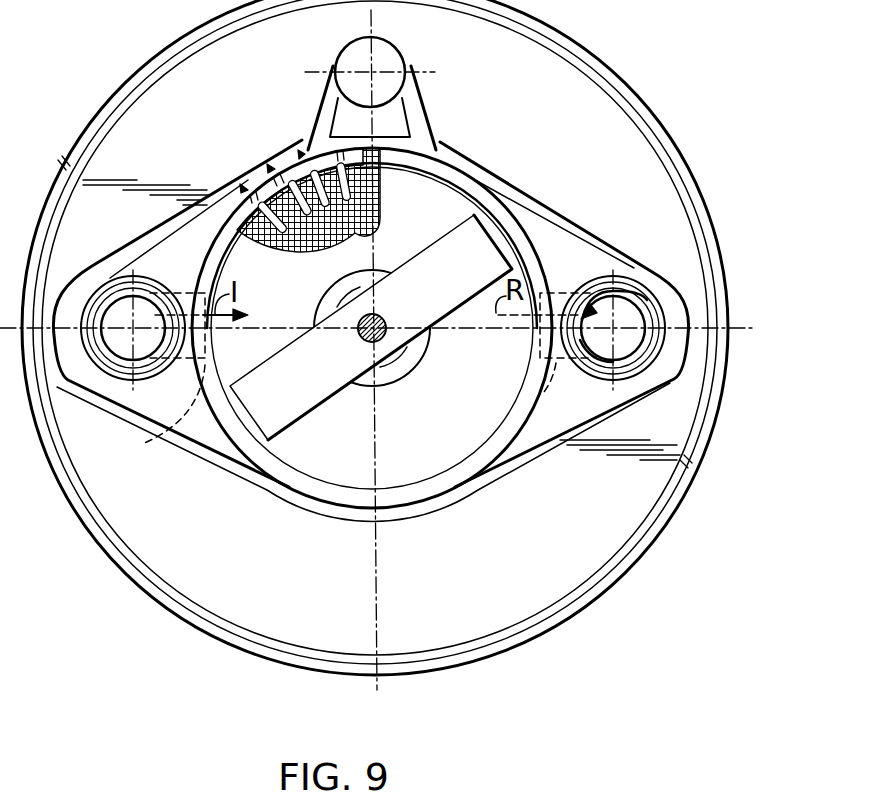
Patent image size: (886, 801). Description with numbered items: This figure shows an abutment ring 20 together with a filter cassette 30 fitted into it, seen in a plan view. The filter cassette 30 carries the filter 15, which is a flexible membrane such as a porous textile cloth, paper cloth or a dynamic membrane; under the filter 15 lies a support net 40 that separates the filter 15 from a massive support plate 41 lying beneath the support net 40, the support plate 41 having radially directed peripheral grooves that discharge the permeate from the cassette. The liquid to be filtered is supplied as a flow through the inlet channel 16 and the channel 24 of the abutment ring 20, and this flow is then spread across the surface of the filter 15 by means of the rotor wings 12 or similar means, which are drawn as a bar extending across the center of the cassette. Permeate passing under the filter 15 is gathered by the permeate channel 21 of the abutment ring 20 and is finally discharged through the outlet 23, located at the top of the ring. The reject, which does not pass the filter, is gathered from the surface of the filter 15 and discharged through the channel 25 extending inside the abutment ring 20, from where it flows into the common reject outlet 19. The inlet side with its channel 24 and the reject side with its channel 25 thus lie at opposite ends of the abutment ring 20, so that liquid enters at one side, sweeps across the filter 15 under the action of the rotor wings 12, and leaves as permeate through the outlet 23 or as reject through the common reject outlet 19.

The rotor wings 12 is at (305, 402).
The filter 15 is at (444, 198).
The inlet channel 16 is at (124, 310).
The common reject outlet 19 is at (632, 317).
The abutment ring 20 is at (690, 125).
The permeate channel 21 is at (243, 181).
The outlet 23 is at (398, 50).
The channel 24 is at (146, 443).
The channel 25 is at (545, 381).
The filter cassette 30 is at (455, 415).
The support net 40 is at (360, 230).
The support plate 41 is at (355, 182).